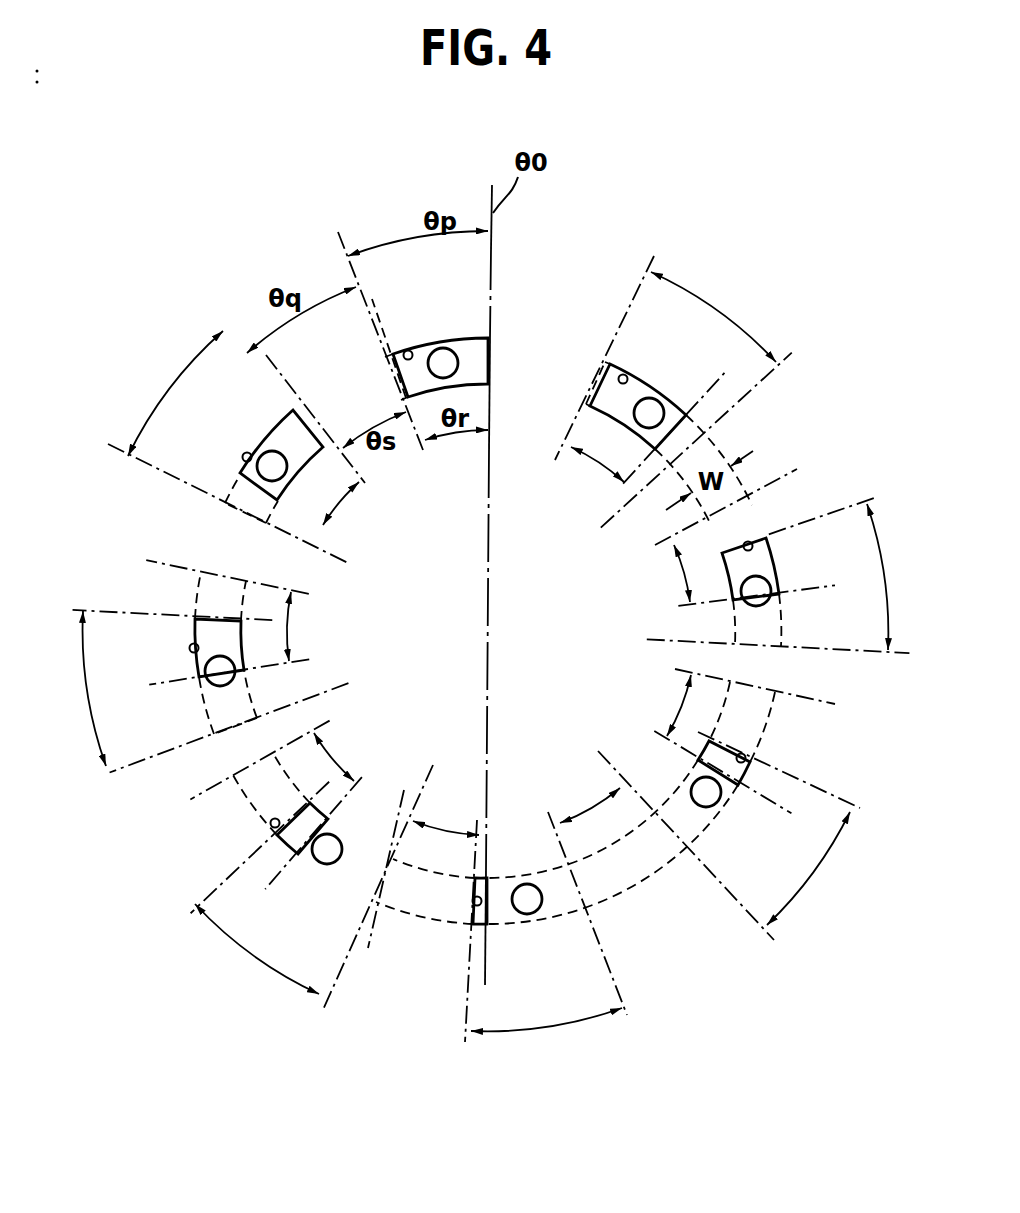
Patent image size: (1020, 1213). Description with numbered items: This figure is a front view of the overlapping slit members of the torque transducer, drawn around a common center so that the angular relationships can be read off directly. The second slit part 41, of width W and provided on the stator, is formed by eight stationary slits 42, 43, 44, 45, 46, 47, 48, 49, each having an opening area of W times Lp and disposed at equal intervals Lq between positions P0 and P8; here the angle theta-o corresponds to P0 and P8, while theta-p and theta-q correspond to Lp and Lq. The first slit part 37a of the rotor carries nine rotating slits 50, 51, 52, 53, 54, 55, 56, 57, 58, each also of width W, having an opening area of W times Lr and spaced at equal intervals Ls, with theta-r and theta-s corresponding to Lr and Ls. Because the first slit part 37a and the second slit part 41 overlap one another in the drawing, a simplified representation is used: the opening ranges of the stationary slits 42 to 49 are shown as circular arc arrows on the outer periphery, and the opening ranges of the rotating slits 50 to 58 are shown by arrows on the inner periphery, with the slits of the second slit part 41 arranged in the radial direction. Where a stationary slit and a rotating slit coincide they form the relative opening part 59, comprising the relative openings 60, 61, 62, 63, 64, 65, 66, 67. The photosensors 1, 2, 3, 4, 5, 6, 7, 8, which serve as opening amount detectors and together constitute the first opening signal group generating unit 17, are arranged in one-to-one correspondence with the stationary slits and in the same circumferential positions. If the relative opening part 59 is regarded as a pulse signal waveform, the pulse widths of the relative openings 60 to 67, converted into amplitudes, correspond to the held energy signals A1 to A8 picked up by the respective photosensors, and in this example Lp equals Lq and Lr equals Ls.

The photosensor 1 is at (450, 348).
The photosensor 2 is at (272, 451).
The photosensor 3 is at (220, 688).
The photosensor 4 is at (335, 864).
The photosensor 5 is at (541, 902).
The photosensor 6 is at (708, 811).
The photosensor 7 is at (771, 608).
The photosensor 8 is at (651, 398).
The first opening signal group generating unit 17 is at (591, 585).
The second slit part 41 is at (591, 585).
The first slit part 37a is at (591, 585).
The relative opening part 59 is at (494, 356).
The stationary slit 42 is at (407, 236).
The stationary slit 43 is at (170, 392).
The stationary slit 44 is at (90, 672).
The stationary slit 45 is at (257, 957).
The stationary slit 46 is at (553, 1028).
The stationary slit 47 is at (814, 874).
The stationary slit 48 is at (884, 557).
The stationary slit 49 is at (716, 303).
The rotating slit 50 is at (472, 438).
The rotating slit 51 is at (334, 503).
The rotating slit 52 is at (290, 628).
The rotating slit 53 is at (328, 752).
The rotating slit 54 is at (450, 828).
The rotating slit 55 is at (585, 817).
The rotating slit 56 is at (681, 697).
The rotating slit 57 is at (681, 573).
The rotating slit 58 is at (597, 463).
The relative opening 60 is at (409, 350).
The relative opening 61 is at (250, 458).
The relative opening 62 is at (194, 648).
The relative opening 63 is at (272, 823).
The relative opening 64 is at (472, 921).
The relative opening 65 is at (744, 758).
The relative opening 66 is at (750, 544).
The relative opening 67 is at (623, 379).